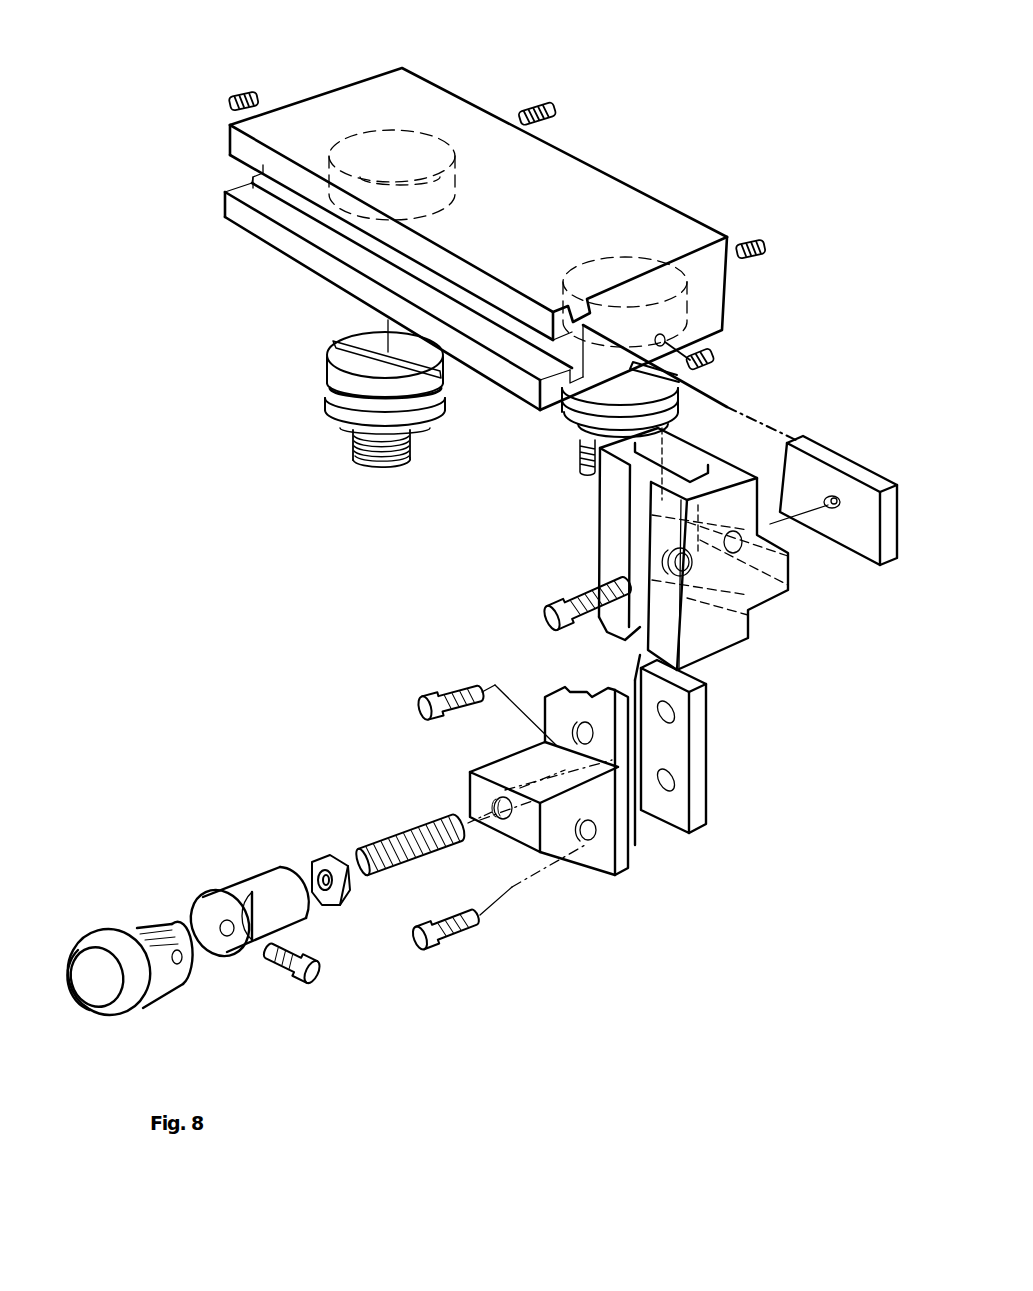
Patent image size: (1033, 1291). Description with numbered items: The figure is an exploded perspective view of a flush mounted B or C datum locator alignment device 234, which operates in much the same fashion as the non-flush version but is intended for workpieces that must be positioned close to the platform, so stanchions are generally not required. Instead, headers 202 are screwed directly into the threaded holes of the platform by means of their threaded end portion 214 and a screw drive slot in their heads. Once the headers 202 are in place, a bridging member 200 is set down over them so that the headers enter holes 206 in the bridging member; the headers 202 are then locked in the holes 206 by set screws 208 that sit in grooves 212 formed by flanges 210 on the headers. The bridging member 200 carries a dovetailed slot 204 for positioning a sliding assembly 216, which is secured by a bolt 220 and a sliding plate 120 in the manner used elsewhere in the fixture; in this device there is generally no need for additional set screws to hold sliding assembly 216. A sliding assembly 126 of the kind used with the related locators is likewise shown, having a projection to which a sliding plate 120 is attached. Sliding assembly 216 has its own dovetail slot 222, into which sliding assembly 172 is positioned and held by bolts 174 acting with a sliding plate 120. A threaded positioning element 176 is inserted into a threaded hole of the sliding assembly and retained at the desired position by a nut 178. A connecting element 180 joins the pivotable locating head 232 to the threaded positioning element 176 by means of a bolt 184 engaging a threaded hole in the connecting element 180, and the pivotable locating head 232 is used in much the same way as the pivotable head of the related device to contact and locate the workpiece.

The bridging member 200 is at (512, 222).
The dovetailed slot 204 is at (398, 287).
The holes 206 is at (524, 208).
The set screws 208 is at (569, 98).
The flush mounted B or C datum locator alignment device 234 is at (124, 378).
The flanges 210 is at (323, 400).
The grooves 212 is at (435, 400).
The threaded end portion 214 is at (409, 478).
The headers 202 is at (567, 417).
The sliding assembly 126 is at (833, 490).
The dovetail slot 222 is at (640, 636).
The sliding assembly 216 is at (737, 574).
The bolt 220 is at (558, 602).
The bolts 174 is at (484, 807).
The sliding plate 120 is at (706, 767).
The sliding assembly 172 is at (566, 809).
The threaded positioning element 176 is at (431, 831).
The nut 178 is at (303, 852).
The connecting element 180 is at (234, 900).
The pivotable locating head 232 is at (109, 949).
The bolt 184 is at (274, 987).